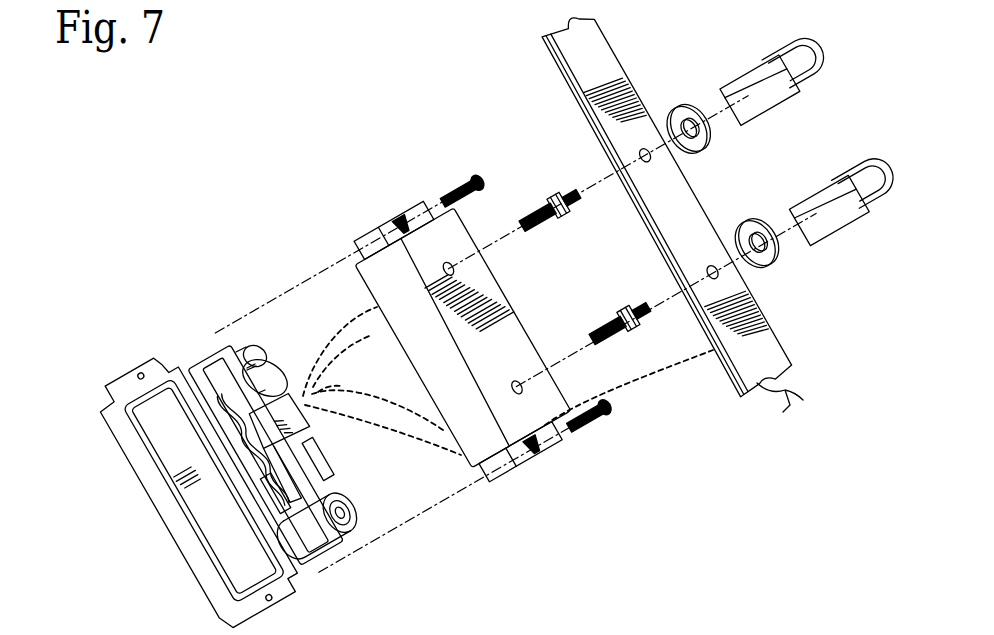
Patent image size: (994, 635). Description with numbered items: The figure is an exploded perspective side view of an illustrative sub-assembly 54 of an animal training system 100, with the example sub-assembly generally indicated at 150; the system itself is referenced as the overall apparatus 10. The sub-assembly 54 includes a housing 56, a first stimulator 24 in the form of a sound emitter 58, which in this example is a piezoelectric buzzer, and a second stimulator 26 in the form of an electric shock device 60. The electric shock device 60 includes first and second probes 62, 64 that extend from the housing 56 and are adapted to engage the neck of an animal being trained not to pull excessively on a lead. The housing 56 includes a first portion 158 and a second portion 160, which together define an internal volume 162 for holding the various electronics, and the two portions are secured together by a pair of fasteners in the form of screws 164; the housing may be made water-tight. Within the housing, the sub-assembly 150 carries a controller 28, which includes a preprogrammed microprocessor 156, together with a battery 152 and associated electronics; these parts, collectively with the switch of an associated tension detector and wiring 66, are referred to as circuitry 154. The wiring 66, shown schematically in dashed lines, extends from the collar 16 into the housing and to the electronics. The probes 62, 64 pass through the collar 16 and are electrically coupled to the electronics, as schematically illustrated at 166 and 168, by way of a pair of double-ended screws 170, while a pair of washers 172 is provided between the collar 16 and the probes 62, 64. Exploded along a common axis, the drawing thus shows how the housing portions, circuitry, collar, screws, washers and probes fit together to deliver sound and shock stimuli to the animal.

The lighting assembly 10 is at (238, 75).
The collar 16 is at (610, 50).
The first stimulator 24 is at (270, 353).
The second stimulator 26 is at (837, 95).
The controller 28 is at (333, 377).
The sub-assembly 54 is at (308, 140).
The housing 56 is at (397, 157).
The sound emitter 58 is at (293, 390).
The electric shock device 60 is at (817, 135).
The first probe 62 is at (827, 53).
The second probe 64 is at (887, 167).
The wiring 66 is at (402, 443).
The animal training system 100 is at (243, 127).
The sub-assembly 150 is at (320, 180).
The battery 152 is at (353, 507).
The circuitry 154 is at (217, 328).
The preprogrammed microprocessor 156 is at (217, 350).
The first portion 158 is at (397, 223).
The second portion 160 is at (140, 365).
The internal volume 162 is at (433, 482).
The screws 164 is at (473, 177).
The electrical coupling 166 is at (340, 323).
The electrical coupling 168 is at (407, 417).
The double-ended screws 170 is at (543, 200).
The washers 172 is at (680, 106).